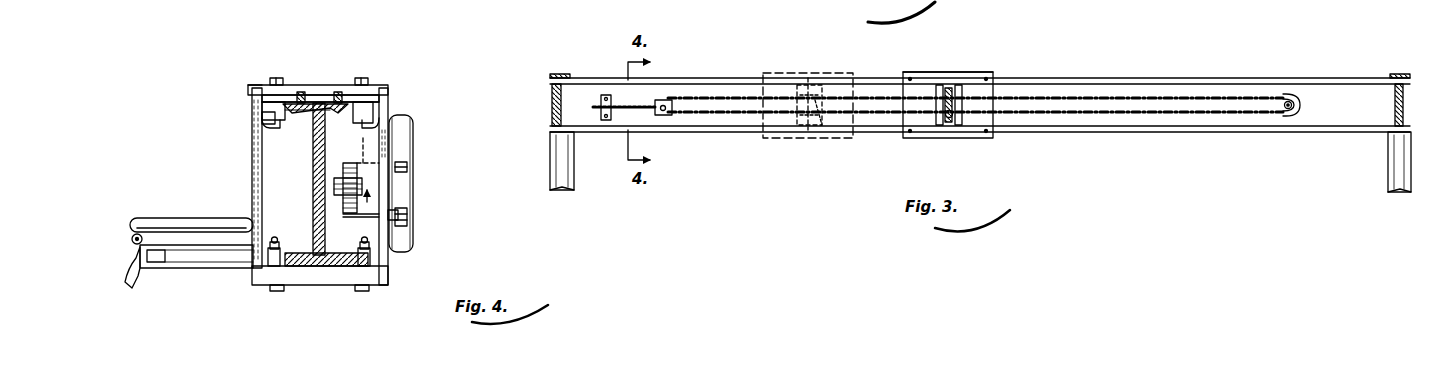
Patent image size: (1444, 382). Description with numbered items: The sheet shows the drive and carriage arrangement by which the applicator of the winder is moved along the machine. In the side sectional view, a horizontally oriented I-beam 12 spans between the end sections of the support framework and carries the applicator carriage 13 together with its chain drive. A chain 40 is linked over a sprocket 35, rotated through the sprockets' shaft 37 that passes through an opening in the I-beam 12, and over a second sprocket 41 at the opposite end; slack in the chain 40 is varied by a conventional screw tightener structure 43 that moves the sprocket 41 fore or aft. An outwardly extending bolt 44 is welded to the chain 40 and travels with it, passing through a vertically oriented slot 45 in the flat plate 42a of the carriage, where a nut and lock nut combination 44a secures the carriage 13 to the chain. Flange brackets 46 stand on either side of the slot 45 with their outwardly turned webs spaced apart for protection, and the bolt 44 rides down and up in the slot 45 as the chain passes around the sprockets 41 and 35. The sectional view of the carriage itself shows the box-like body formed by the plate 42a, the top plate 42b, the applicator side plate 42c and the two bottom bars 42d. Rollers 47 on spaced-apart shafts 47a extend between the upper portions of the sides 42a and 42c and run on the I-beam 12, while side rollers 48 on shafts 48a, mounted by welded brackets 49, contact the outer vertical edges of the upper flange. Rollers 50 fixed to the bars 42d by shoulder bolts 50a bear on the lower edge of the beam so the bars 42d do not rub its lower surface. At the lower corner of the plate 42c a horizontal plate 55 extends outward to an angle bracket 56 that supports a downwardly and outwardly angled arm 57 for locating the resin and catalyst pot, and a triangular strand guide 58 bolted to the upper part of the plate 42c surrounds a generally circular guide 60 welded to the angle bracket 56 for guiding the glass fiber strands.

In FIG. 4, the I-beam 12 is at (312, 183).
In FIG. 4, the applicator carriage 13 is at (261, 84).
In FIG. 3, the applicator carriage 13 is at (834, 72).
In FIG. 3, the sprocket 35 is at (1288, 110).
In FIG. 3, the sprockets' shaft 37 is at (1290, 94).
In FIG. 3, the chain 40 is at (736, 95).
In FIG. 3, the sprocket 41 is at (666, 115).
In FIG. 4, the flat plate 42a is at (388, 128).
In FIG. 3, the flat plate 42a is at (810, 130).
In FIG. 4, the top plate 42b is at (374, 88).
In FIG. 4, the applicator side plate 42c is at (253, 172).
In FIG. 4, the bottom bars 42d is at (342, 272).
In FIG. 3, the screw tightener structure 43 is at (645, 92).
In FIG. 4, the bolt 44 is at (370, 156).
In FIG. 3, the bolt 44 is at (808, 72).
In FIG. 4, the nut and lock nut combination 44a is at (404, 192).
In FIG. 3, the nut and lock nut combination 44a is at (949, 118).
In FIG. 3, the slot 45 is at (818, 126).
In FIG. 4, the flange brackets 46 is at (404, 150).
In FIG. 3, the flange brackets 46 is at (937, 103).
In FIG. 4, the rollers 47 is at (301, 92).
In FIG. 4, the shafts 47a is at (311, 95).
In FIG. 4, the side rollers 48 is at (300, 118).
In FIG. 4, the shafts 48a is at (376, 100).
In FIG. 4, the brackets 49 is at (386, 110).
In FIG. 4, the rollers 50 is at (270, 270).
In FIG. 4, the shoulder bolts 50a is at (276, 242).
In FIG. 4, the horizontal plate 55 is at (240, 265).
In FIG. 4, the angle bracket 56 is at (152, 278).
In FIG. 4, the arm 57 is at (130, 280).
In FIG. 4, the strand guide 58 is at (196, 220).
In FIG. 4, the circular guide 60 is at (138, 233).